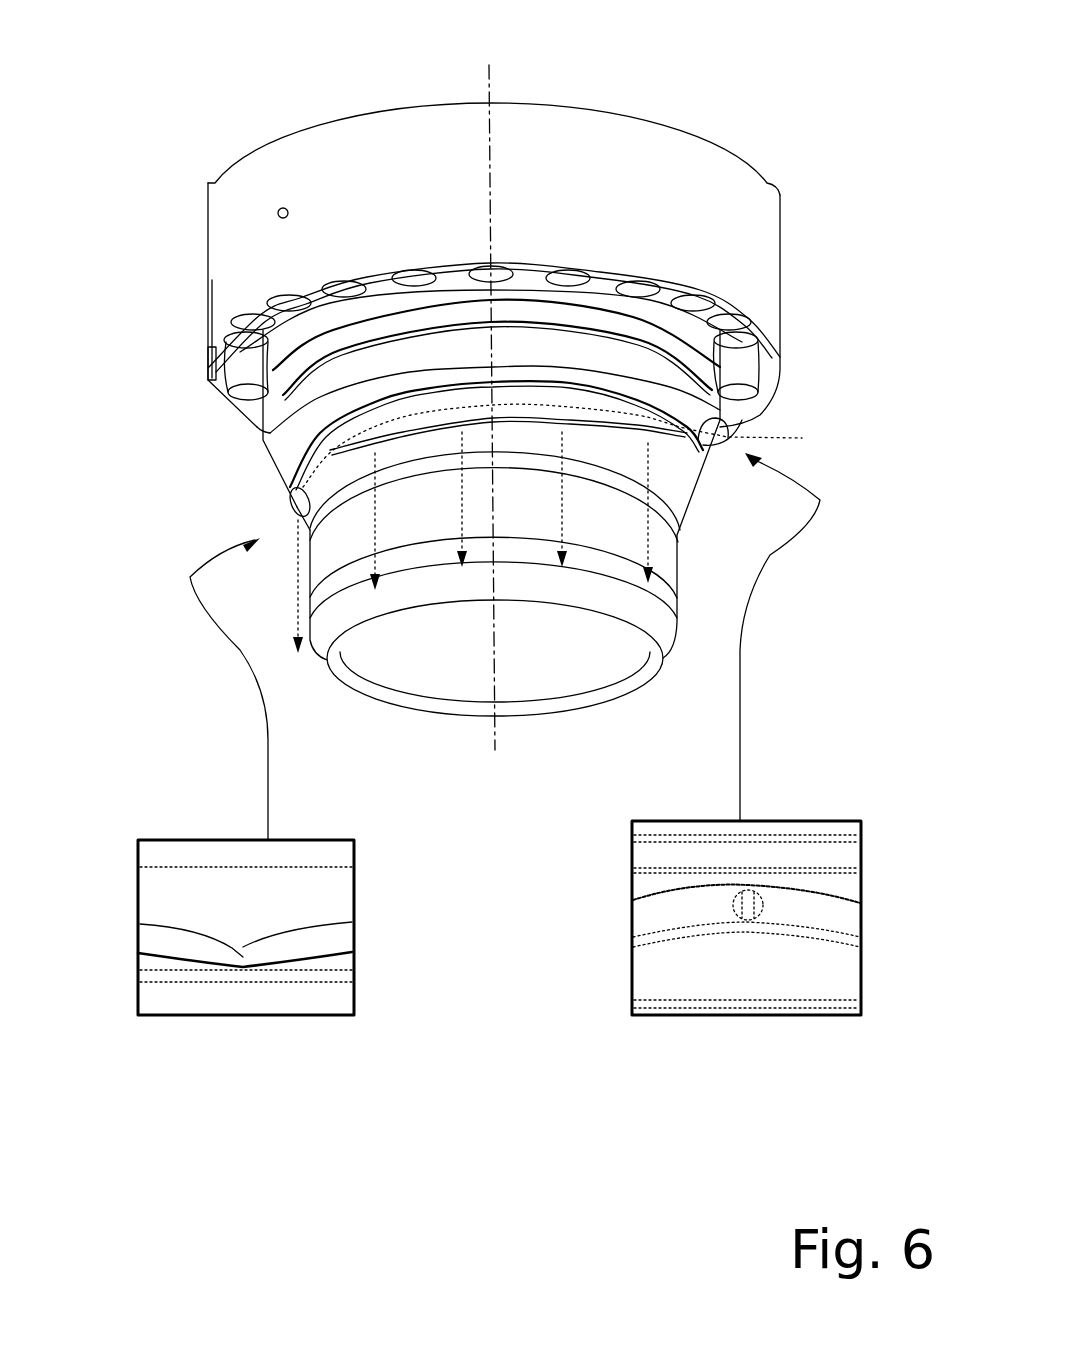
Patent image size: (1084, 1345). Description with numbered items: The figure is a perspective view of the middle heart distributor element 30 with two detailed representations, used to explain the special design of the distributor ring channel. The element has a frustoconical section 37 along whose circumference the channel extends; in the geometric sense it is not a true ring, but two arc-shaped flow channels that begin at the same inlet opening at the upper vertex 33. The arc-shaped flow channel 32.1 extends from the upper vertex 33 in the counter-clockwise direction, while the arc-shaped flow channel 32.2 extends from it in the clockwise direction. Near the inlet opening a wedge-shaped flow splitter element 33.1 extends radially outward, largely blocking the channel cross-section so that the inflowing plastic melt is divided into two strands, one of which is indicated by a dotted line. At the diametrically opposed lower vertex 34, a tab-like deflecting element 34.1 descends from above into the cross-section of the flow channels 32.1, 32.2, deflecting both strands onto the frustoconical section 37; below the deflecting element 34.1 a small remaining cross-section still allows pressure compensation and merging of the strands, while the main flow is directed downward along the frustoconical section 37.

The middle heart distributor element 30 is at (814, 76).
The arc-shaped flow channel 32.1 is at (462, 400).
The arc-shaped flow channel 32.2 is at (178, 940).
The upper vertex 33 is at (720, 423).
The wedge-shaped flow splitter element 33.1 is at (700, 437).
The lower vertex 34 is at (297, 518).
The tab-like deflecting element 34.1 is at (292, 502).
The frustoconical section 37 is at (543, 453).